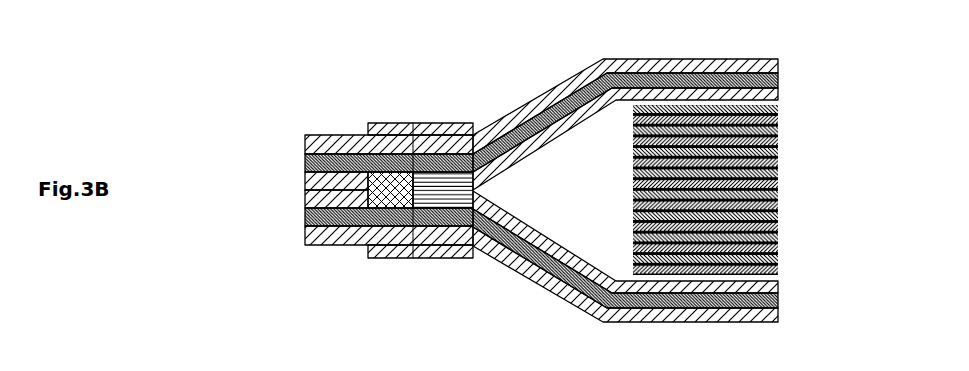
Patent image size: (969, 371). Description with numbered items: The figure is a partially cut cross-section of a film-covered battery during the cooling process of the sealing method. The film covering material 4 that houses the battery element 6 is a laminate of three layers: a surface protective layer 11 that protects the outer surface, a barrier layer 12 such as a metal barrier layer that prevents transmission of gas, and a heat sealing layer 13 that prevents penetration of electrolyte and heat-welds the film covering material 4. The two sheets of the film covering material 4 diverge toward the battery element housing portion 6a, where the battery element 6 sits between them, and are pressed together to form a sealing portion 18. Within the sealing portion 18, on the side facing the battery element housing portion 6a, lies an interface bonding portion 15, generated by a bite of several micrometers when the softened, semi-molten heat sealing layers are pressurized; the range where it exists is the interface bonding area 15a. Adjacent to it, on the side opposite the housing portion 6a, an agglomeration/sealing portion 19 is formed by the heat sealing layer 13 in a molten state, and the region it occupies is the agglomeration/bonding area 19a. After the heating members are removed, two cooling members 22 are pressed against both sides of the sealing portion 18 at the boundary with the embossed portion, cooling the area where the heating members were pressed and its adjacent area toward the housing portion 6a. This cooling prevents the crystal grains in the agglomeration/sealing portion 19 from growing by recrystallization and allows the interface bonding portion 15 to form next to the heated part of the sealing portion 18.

The film covering material 4 is at (777, 52).
The battery element 6 is at (782, 149).
The battery element housing portion 6a is at (563, 144).
The surface protective layer 11 is at (297, 140).
The barrier layer 12 is at (297, 152).
The heat sealing layer 13 is at (653, 82).
The interface bonding portion 15 is at (440, 175).
The interface bonding area 15a is at (465, 115).
The sealing portion 18 is at (360, 250).
The agglomeration/sealing portion 19 is at (368, 218).
The agglomeration/bonding area 19a is at (405, 115).
The cooling member 22 is at (420, 112).